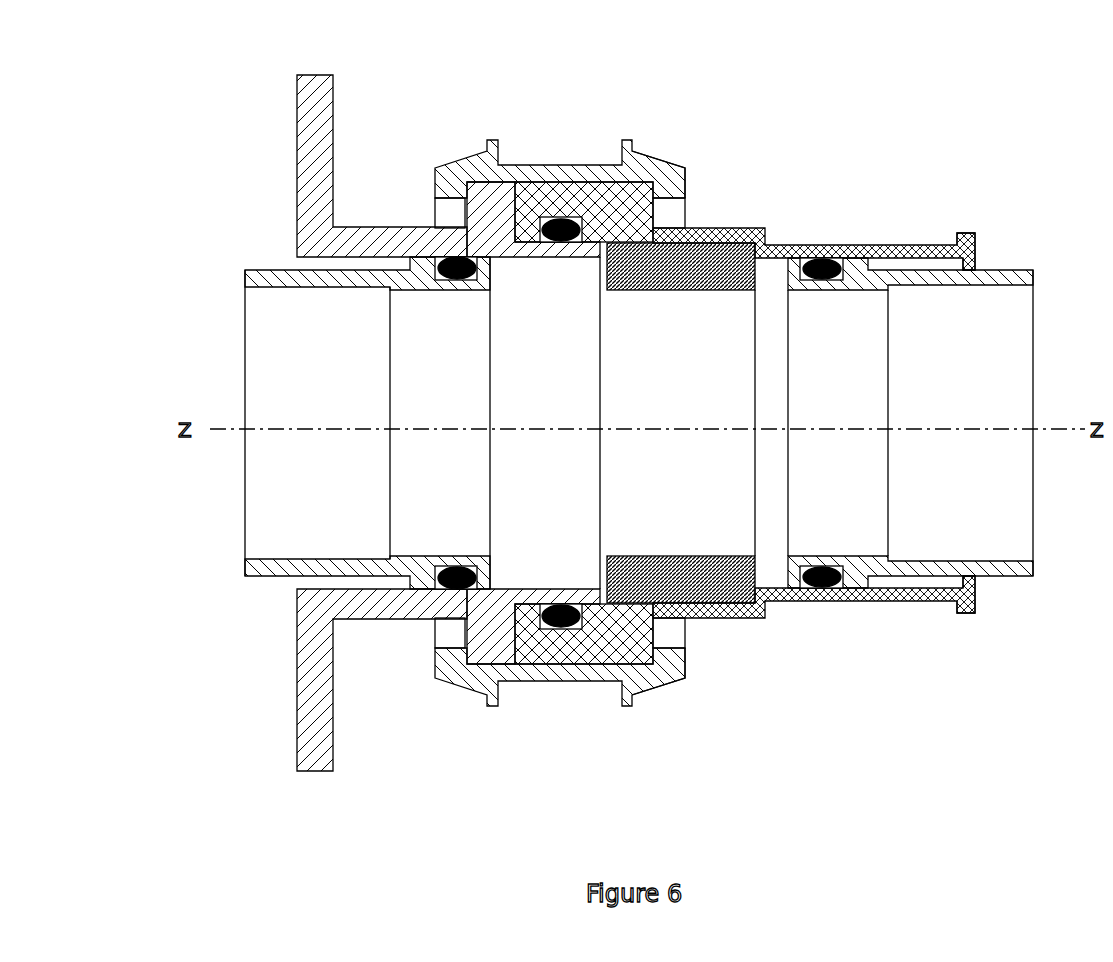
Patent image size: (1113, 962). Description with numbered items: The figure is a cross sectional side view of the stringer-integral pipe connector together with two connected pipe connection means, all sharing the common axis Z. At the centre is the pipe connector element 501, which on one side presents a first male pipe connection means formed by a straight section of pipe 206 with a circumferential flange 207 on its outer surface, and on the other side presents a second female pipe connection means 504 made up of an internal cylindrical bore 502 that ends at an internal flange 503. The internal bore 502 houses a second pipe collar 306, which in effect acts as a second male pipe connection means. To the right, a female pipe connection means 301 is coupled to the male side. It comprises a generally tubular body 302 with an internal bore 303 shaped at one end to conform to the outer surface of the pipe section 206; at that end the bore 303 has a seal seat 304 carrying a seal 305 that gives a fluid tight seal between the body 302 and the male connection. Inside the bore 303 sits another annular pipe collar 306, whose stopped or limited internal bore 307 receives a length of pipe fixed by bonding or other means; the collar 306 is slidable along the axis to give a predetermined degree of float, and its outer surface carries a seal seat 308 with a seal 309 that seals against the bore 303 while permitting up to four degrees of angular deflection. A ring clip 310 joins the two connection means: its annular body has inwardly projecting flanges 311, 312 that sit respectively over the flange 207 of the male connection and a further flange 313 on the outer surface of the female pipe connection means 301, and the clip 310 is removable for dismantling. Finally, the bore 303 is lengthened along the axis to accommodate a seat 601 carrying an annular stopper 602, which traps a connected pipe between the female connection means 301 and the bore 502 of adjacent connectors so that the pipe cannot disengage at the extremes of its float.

The straight section of pipe 206 is at (545, 625).
The circumferential flange 207 is at (492, 192).
The female pipe connection means 301 is at (795, 645).
The tubular body 302 is at (952, 246).
The internal bore 303 is at (867, 352).
The seal seat 304 is at (472, 489).
The seal 305 is at (562, 630).
The pipe collar 306 is at (245, 561).
The internal bore 307 is at (267, 560).
The seal seat 308 is at (450, 280).
The seal 309 is at (455, 285).
The ring clip 310 is at (600, 376).
The inwardly projecting flange 311 is at (440, 172).
The inwardly projecting flange 312 is at (684, 168).
The flange 313 is at (657, 212).
The pipe connector element 501 is at (388, 233).
The internal cylindrical bore 502 is at (297, 588).
The internal flange 503 is at (513, 407).
The second female pipe connection means 504 is at (289, 262).
The seat 601 is at (738, 521).
The annular stopper 602 is at (678, 577).